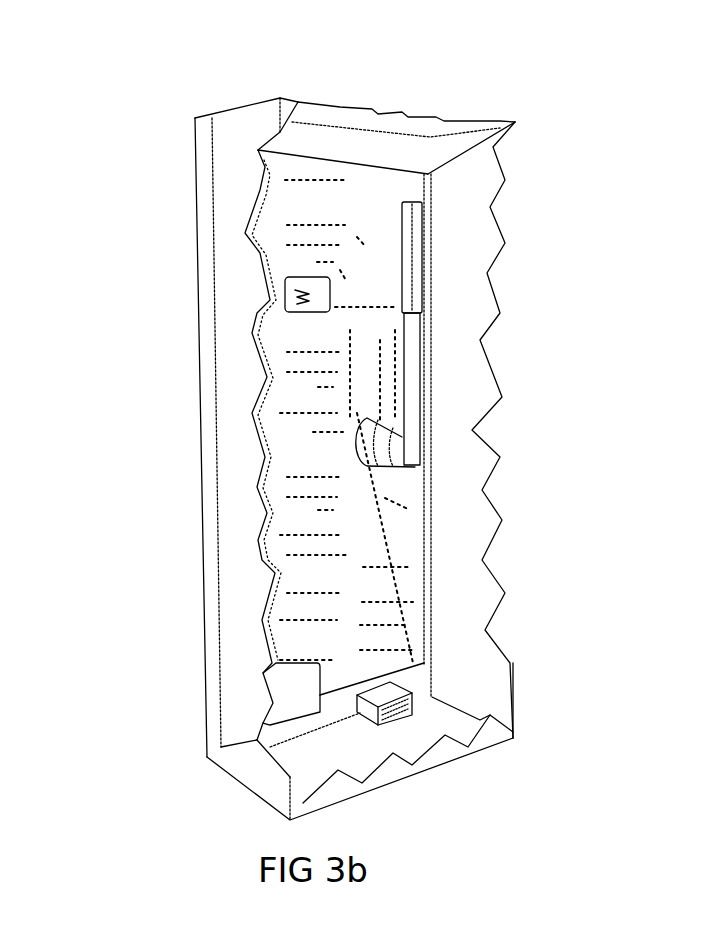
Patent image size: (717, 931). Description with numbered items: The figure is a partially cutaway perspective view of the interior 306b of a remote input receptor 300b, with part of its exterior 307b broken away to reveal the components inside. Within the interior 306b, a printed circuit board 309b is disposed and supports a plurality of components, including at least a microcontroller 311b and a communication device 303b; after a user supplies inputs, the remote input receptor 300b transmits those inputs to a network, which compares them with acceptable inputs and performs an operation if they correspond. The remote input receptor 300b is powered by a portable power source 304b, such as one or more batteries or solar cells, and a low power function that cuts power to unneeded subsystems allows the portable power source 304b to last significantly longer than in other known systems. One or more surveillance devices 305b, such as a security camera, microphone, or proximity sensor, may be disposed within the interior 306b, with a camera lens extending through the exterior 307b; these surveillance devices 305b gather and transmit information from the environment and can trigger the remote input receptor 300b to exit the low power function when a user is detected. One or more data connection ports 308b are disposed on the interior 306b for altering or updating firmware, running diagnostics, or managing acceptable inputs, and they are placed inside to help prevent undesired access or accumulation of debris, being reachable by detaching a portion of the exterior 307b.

The remote input receptor 300b is at (380, 76).
The communication device 303b is at (410, 238).
The portable power source 304b is at (298, 695).
The surveillance device 305b is at (428, 178).
The interior 306b is at (457, 510).
The exterior 307b is at (237, 737).
The data connection port 308b is at (390, 705).
The printed circuit board 309b is at (293, 203).
The microcontroller 311b is at (292, 297).